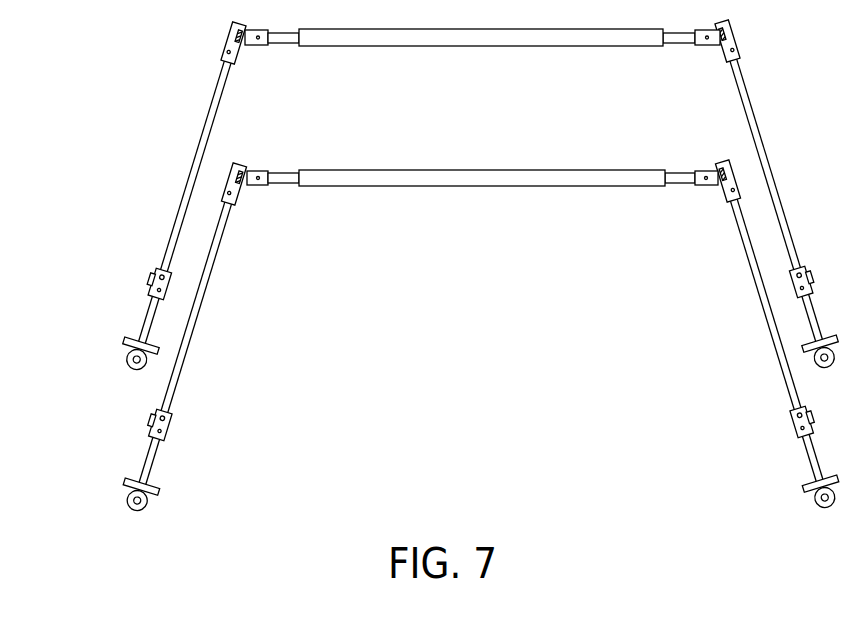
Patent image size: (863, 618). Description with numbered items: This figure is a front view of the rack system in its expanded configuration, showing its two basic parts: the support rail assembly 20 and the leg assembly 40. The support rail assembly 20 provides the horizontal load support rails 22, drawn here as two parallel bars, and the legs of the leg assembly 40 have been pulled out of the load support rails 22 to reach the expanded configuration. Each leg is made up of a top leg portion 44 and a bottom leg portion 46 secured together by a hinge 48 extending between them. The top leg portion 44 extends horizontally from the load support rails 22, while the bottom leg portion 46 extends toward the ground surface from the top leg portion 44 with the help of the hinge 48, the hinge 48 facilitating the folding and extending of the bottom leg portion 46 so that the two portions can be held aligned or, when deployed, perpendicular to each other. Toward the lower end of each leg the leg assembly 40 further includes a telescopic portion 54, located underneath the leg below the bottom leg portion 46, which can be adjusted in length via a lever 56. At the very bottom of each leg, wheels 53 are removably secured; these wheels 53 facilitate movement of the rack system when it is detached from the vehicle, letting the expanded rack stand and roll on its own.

The support rail assembly 20 is at (482, 107).
The load support rails 22 is at (541, 48).
The leg assembly 40 is at (677, 166).
The top leg portion 44 is at (284, 170).
The bottom leg portion 46 is at (783, 186).
The hinge 48 is at (742, 48).
The wheels 53 is at (813, 502).
The telescopic portion 54 is at (143, 470).
The lever 56 is at (150, 285).